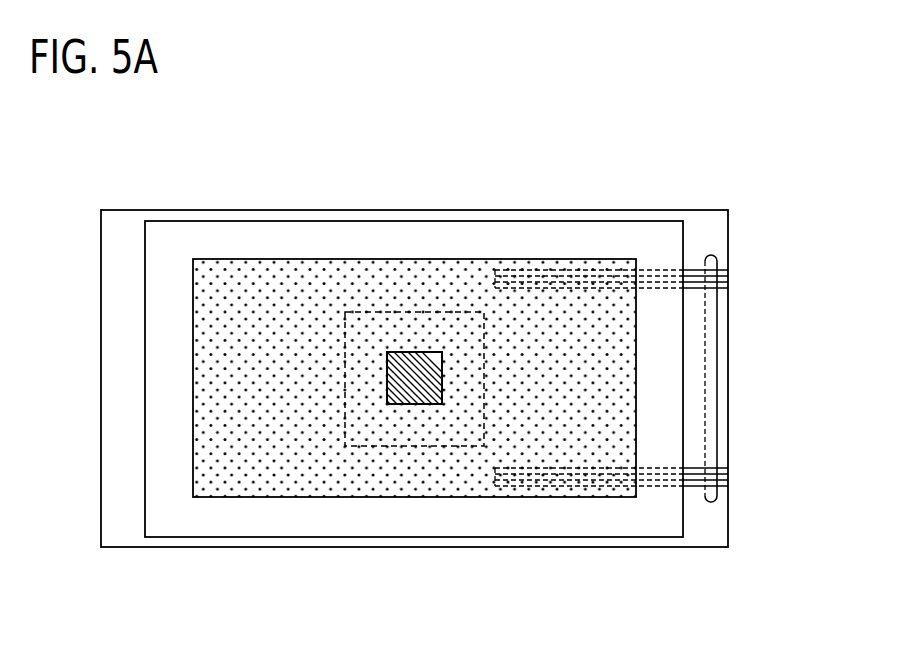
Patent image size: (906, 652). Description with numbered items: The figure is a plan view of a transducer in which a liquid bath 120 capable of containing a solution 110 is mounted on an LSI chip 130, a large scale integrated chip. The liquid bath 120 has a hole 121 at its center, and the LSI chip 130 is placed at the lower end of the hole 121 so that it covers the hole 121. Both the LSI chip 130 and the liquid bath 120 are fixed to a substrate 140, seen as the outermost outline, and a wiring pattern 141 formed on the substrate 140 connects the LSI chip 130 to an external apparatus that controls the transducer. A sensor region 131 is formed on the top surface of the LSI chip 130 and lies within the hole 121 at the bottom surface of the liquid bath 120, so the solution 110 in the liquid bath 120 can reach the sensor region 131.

The solution 110 is at (277, 275).
The liquid bath 120 is at (188, 221).
The hole 121 is at (398, 402).
The LSI chip 130 is at (445, 446).
The sensor region 131 is at (420, 362).
The substrate 140 is at (634, 548).
The wiring pattern 141 is at (720, 365).